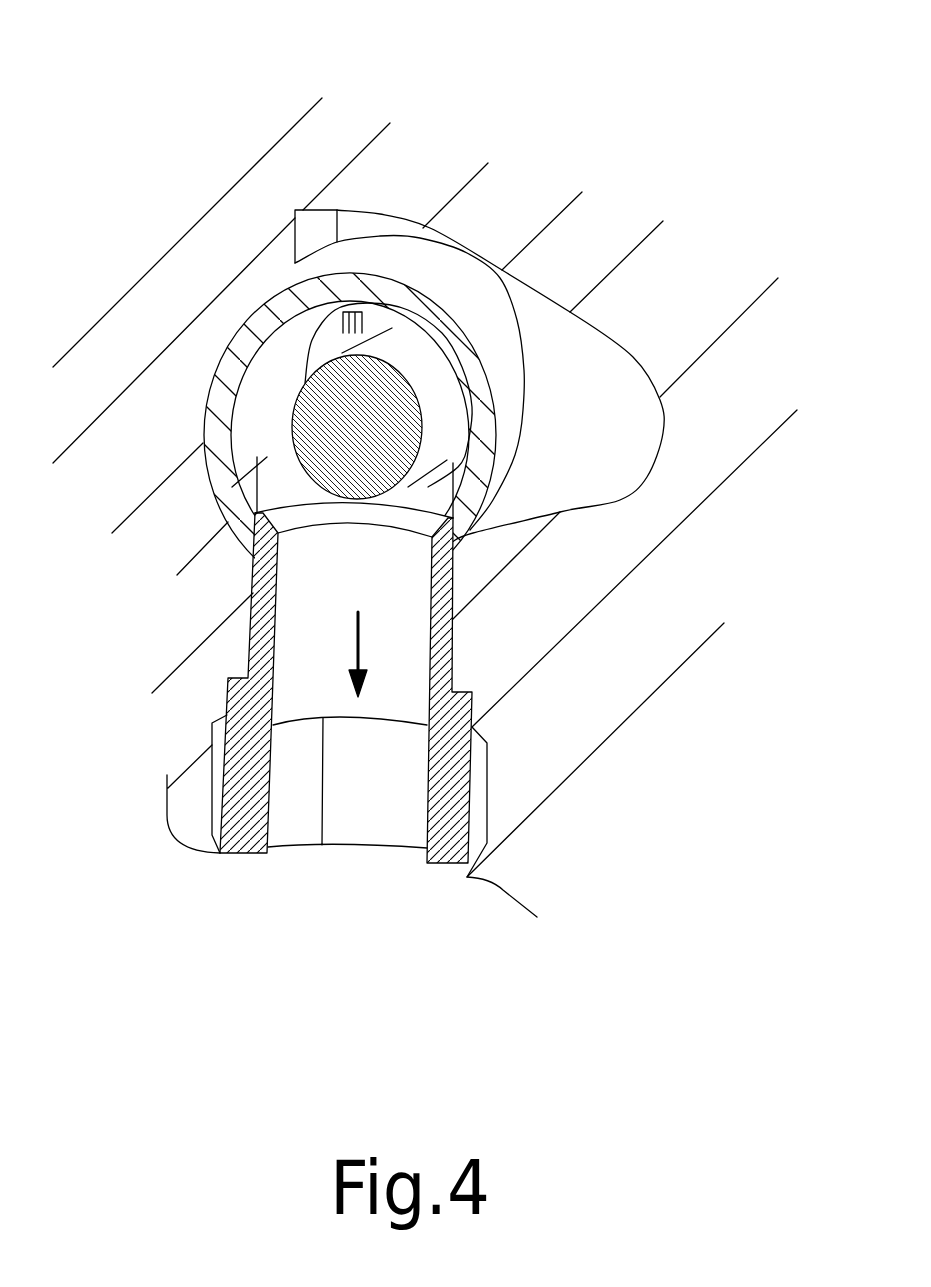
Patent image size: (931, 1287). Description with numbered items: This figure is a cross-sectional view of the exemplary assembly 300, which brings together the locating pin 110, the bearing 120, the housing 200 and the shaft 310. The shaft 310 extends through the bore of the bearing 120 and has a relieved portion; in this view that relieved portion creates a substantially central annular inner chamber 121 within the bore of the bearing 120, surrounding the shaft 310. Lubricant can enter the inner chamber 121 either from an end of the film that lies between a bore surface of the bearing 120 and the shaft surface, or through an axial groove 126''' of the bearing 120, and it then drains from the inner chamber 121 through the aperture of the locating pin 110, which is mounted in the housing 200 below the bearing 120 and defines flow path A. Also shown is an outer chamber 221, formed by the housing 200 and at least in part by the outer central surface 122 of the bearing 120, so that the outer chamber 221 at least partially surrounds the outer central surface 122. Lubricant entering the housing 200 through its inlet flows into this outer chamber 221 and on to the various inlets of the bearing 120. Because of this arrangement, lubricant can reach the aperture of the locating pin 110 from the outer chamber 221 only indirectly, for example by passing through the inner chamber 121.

The assembly 300 is at (415, 35).
The housing 200 is at (692, 315).
The outer central surface 122 is at (520, 410).
The bearing 120 is at (225, 425).
The inner chamber 121 is at (235, 498).
The axial groove 126''' is at (229, 349).
The shaft 310 is at (378, 441).
The outer chamber 221 is at (250, 533).
The locating pin 110 is at (248, 853).